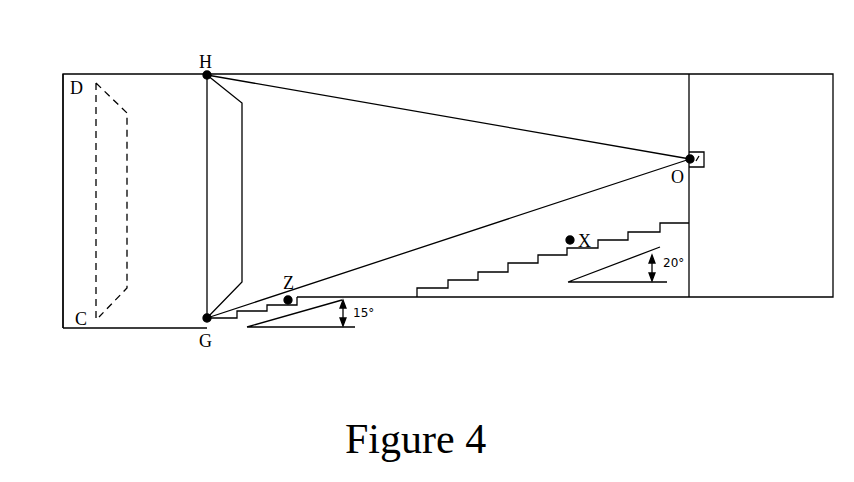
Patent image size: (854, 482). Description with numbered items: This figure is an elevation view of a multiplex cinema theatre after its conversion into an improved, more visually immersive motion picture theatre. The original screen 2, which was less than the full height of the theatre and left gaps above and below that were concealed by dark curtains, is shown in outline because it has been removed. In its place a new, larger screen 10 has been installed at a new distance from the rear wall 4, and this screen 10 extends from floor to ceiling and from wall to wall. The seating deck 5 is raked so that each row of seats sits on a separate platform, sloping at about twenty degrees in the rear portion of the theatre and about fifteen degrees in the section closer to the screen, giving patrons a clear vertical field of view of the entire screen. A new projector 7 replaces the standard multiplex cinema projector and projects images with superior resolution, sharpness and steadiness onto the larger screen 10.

The screen 2 is at (122, 133).
The rear wall 4 is at (72, 198).
The seating deck 5 is at (532, 263).
The projector 7 is at (703, 150).
The screen 10 is at (237, 138).